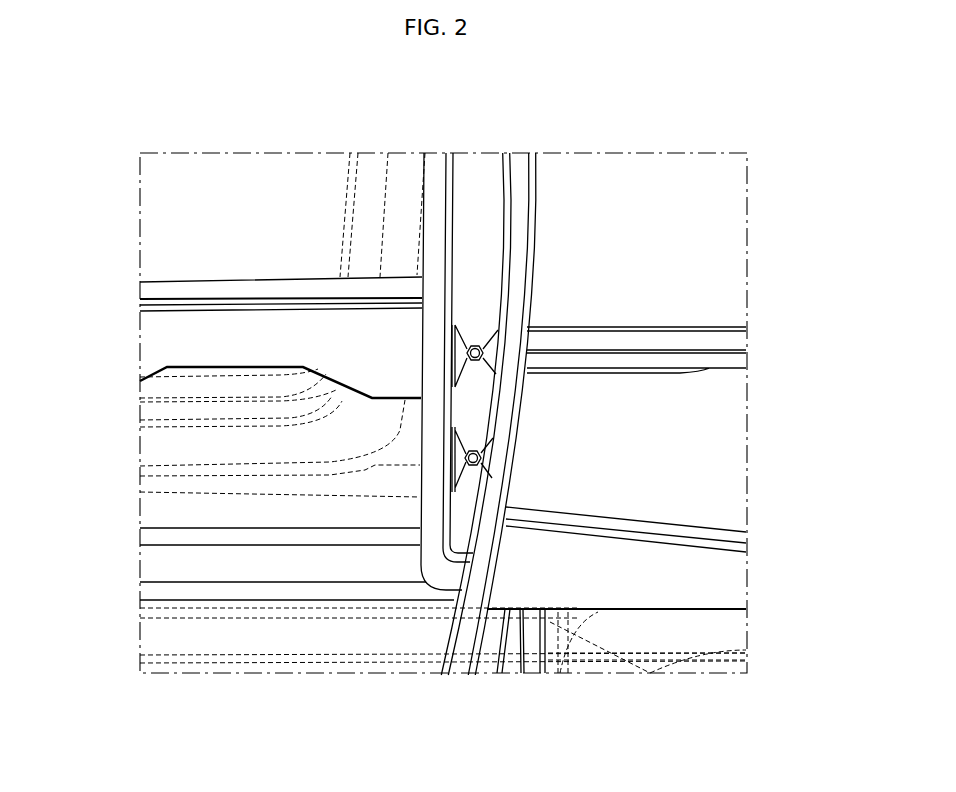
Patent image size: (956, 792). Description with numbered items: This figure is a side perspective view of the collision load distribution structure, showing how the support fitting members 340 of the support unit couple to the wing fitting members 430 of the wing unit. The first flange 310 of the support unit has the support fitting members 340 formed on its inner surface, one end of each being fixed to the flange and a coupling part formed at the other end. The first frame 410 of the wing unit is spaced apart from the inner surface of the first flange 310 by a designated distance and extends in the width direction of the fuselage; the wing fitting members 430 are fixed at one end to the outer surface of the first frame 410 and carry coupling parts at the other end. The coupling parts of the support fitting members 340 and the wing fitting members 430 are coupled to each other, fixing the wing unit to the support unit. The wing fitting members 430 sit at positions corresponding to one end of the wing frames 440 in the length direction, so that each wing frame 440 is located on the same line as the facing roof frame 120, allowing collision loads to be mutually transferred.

The roof frame 120 is at (215, 558).
The first flange 310 is at (430, 512).
The support fitting member 340 is at (462, 447).
The first frame 410 is at (520, 175).
The wing fitting member 430 is at (483, 354).
The wing frame 440 is at (707, 338).